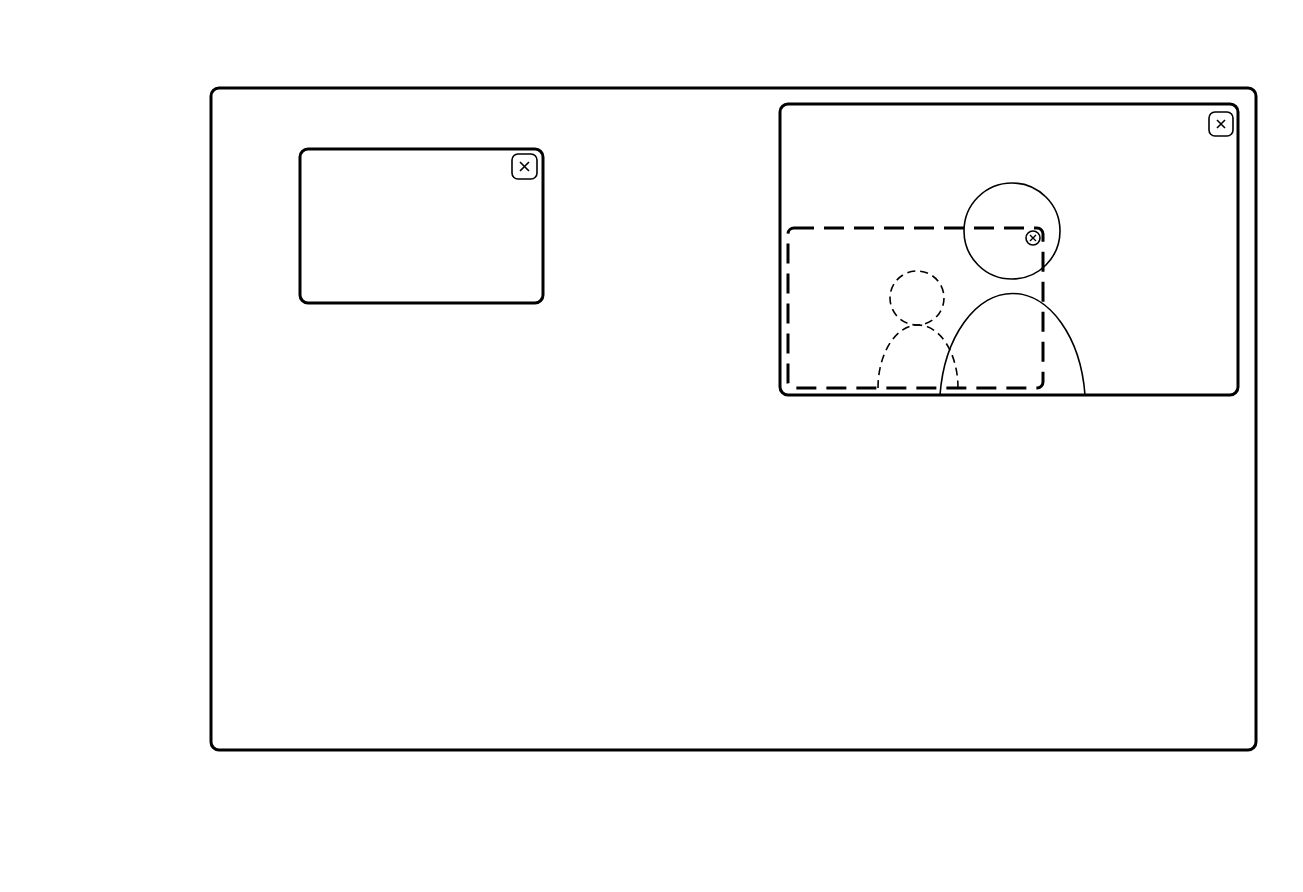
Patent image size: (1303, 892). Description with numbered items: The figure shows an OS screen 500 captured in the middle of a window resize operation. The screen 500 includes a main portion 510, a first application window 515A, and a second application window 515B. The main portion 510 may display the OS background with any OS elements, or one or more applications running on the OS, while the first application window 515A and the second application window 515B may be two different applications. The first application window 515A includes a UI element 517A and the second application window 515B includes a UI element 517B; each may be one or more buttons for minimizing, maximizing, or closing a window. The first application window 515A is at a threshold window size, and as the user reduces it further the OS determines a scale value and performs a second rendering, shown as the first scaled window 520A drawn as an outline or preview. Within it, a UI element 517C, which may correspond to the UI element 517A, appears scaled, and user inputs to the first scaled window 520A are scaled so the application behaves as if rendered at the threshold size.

The OS screen 500 is at (240, 64).
The main portion 510 is at (758, 432).
The first application window 515A is at (1043, 143).
The second application window 515B is at (457, 189).
The UI element 517A is at (1208, 118).
The UI element 517B is at (539, 173).
The UI element 517C is at (1041, 238).
The first scaled window 520A is at (952, 268).